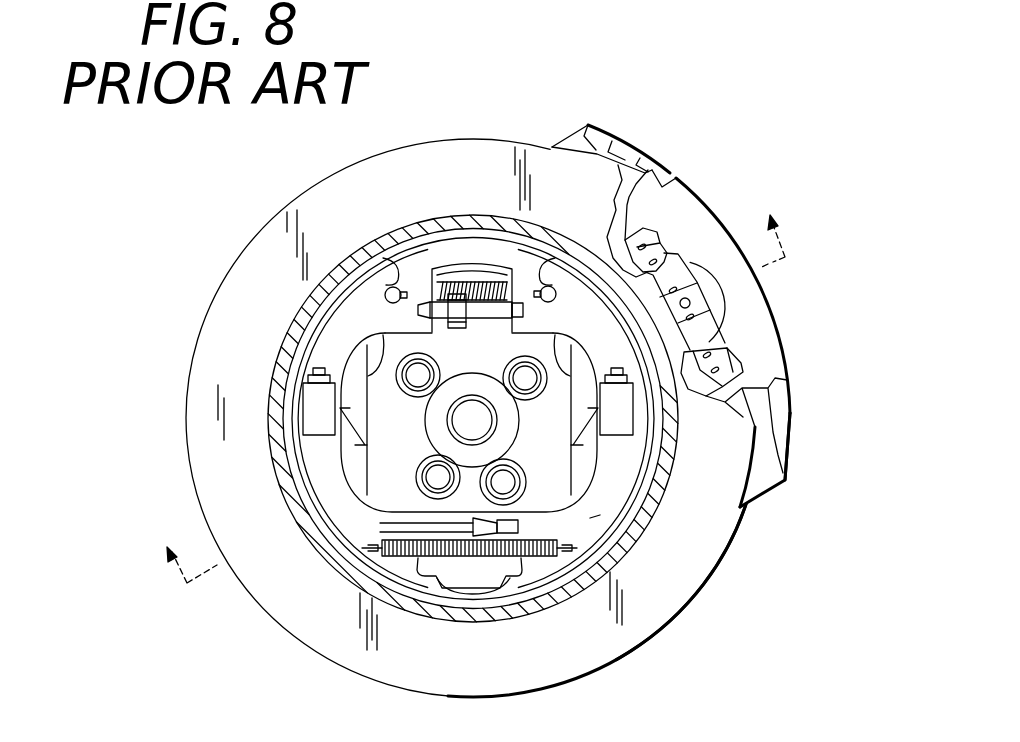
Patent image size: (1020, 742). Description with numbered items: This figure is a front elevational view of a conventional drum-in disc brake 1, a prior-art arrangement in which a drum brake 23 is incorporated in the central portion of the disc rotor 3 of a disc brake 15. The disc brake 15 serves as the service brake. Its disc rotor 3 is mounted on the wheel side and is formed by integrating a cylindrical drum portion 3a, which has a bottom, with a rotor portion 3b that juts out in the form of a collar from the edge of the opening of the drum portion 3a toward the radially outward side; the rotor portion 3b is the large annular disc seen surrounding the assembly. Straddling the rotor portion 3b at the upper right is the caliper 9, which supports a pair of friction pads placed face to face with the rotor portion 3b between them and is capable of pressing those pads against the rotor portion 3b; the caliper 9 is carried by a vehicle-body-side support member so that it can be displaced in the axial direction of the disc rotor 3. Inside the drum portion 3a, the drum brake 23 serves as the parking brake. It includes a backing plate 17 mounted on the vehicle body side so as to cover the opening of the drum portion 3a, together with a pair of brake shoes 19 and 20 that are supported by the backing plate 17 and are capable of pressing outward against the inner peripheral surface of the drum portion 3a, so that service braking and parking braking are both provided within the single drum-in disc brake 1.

The drum-in disc brake 1 is at (461, 138).
The disc rotor 3 is at (834, 547).
The drum portion 3a is at (590, 518).
The rotor portion 3b is at (728, 512).
The caliper 9 is at (703, 242).
The disc brake 15 is at (789, 366).
The backing plate 17 is at (380, 390).
The brake shoe 19 is at (327, 482).
The brake shoe 20 is at (605, 470).
The drum brake 23 is at (653, 482).